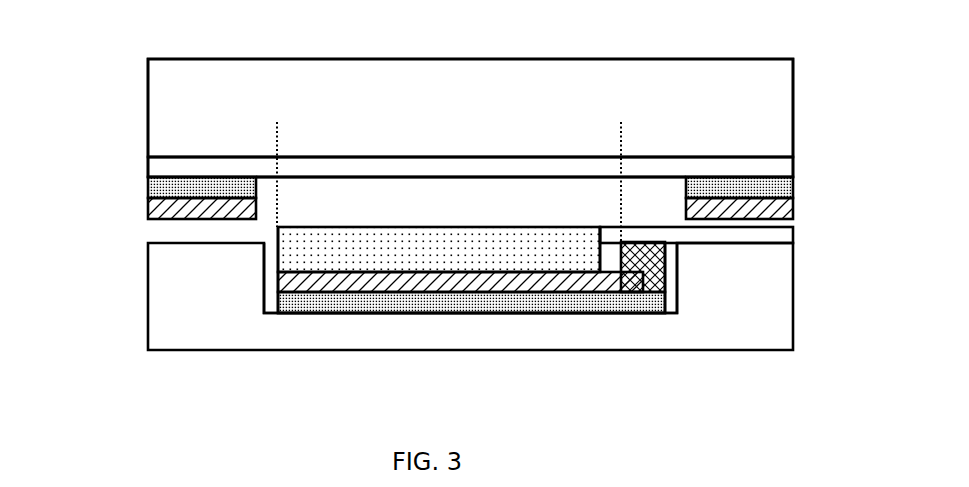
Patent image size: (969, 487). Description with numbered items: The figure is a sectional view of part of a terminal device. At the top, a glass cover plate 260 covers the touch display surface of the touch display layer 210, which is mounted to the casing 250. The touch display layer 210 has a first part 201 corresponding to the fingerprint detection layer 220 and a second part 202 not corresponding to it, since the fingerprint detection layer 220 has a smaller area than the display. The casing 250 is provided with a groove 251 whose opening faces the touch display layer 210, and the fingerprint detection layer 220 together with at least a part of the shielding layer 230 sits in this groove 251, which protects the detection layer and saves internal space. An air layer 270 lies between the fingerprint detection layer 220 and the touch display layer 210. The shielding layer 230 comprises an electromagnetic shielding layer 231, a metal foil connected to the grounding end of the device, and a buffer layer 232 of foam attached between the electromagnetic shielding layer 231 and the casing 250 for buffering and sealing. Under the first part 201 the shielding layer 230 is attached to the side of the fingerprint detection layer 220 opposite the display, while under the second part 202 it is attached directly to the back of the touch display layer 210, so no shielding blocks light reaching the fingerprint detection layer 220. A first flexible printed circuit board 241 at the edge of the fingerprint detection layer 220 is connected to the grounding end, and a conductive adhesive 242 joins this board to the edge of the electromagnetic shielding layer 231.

The first part 201 is at (470, 100).
The second part 202 is at (470, 88).
The touch display layer 210 is at (470, 95).
The fingerprint detection layer 220 is at (439, 318).
The shielding layer 230 is at (471, 316).
The electromagnetic shielding layer 231 is at (429, 303).
The buffer layer 232 is at (418, 272).
The first flexible printed circuit board 241 is at (736, 265).
The conductive adhesive 242 is at (651, 325).
The casing 250 is at (470, 333).
The groove 251 is at (460, 327).
The glass cover plate 260 is at (470, 82).
The air layer 270 is at (471, 126).